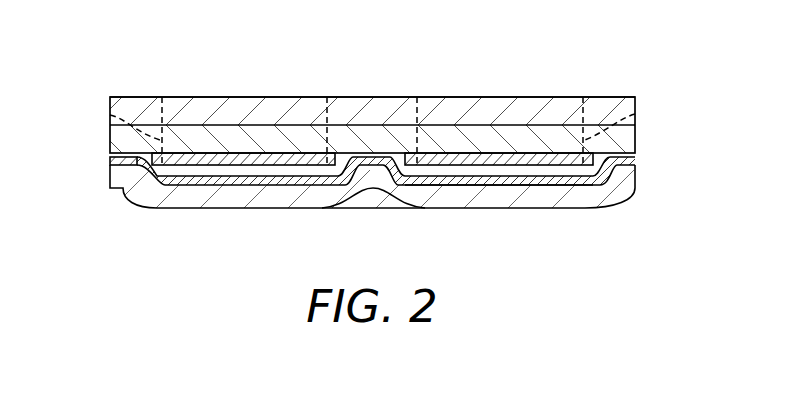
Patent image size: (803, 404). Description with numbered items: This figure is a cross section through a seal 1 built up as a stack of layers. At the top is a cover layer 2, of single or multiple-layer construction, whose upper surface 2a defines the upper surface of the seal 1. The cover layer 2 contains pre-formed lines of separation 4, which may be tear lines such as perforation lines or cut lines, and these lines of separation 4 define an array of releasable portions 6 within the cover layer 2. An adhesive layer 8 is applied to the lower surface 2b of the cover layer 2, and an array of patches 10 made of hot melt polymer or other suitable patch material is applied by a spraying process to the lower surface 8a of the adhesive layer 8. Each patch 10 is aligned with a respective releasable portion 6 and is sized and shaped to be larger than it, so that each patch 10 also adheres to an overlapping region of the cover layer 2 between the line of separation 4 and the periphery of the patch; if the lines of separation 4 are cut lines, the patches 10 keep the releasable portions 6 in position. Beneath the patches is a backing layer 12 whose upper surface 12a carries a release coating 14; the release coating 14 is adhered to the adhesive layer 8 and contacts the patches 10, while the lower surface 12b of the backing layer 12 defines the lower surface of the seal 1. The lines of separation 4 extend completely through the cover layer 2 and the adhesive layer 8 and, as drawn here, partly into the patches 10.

The seal 1 is at (86, 65).
The cover layer 2 is at (610, 112).
The upper surface of the cover layer 2a is at (370, 97).
The lower surface of the cover layer 2b is at (262, 129).
The pre-formed lines of separation 4 is at (327, 97).
The releasable portions 6 is at (203, 108).
The adhesive layer 8 is at (540, 135).
The lower surface of the adhesive layer 8a is at (138, 168).
The patches 10 is at (250, 160).
The backing layer 12 is at (578, 198).
The upper surface of the backing layer 12a is at (441, 187).
The lower surface of the backing layer 12b is at (332, 208).
The release coating 14 is at (637, 158).